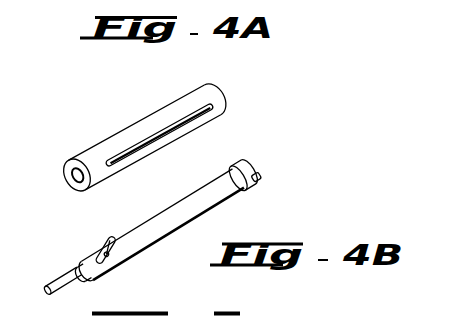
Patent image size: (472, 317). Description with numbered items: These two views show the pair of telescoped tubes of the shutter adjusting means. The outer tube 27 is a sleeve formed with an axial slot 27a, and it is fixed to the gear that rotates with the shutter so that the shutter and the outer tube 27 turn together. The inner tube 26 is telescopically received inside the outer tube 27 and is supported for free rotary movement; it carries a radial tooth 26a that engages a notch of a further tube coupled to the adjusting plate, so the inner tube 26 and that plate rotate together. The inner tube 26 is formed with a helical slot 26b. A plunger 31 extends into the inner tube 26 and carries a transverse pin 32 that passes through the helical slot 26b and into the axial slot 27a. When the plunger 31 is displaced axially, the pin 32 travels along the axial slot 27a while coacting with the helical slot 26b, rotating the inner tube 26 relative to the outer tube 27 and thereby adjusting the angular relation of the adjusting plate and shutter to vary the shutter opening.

In FIG. 4B, the tube 26 is at (214, 198).
In FIG. 4B, the radial tooth 26a is at (259, 179).
In FIG. 4B, the helical slot 26b is at (108, 241).
In FIG. 4A, the tube 27 is at (122, 144).
In FIG. 4A, the axial slot 27a is at (169, 128).
In FIG. 4B, the plunger 31 is at (56, 282).
In FIG. 4B, the transverse pin 32 is at (122, 255).